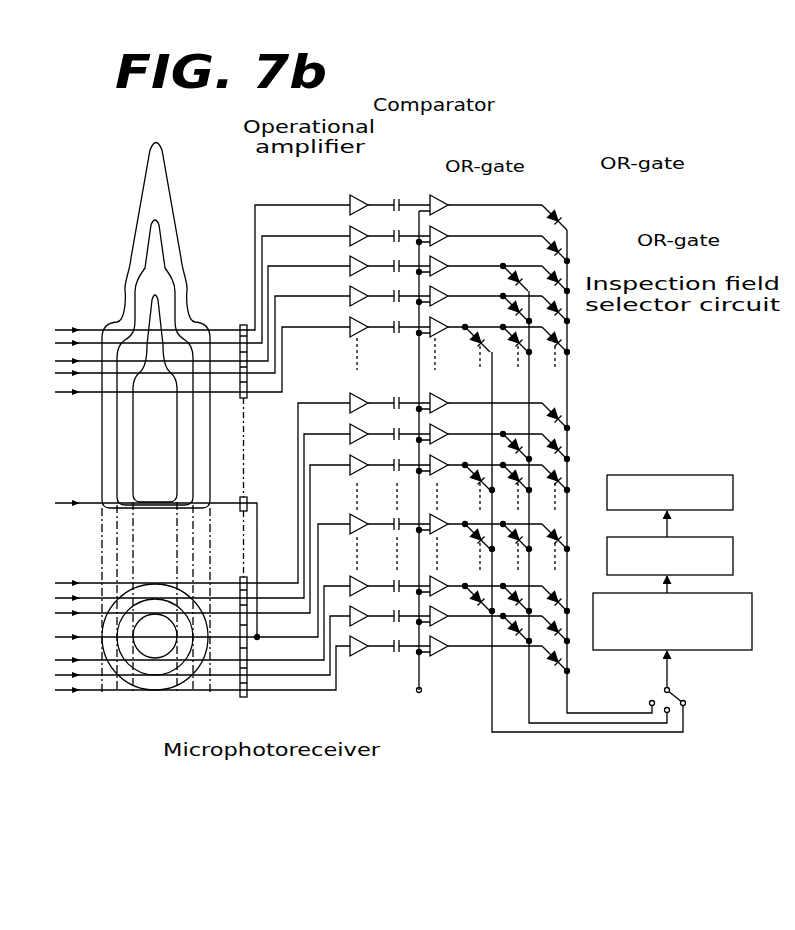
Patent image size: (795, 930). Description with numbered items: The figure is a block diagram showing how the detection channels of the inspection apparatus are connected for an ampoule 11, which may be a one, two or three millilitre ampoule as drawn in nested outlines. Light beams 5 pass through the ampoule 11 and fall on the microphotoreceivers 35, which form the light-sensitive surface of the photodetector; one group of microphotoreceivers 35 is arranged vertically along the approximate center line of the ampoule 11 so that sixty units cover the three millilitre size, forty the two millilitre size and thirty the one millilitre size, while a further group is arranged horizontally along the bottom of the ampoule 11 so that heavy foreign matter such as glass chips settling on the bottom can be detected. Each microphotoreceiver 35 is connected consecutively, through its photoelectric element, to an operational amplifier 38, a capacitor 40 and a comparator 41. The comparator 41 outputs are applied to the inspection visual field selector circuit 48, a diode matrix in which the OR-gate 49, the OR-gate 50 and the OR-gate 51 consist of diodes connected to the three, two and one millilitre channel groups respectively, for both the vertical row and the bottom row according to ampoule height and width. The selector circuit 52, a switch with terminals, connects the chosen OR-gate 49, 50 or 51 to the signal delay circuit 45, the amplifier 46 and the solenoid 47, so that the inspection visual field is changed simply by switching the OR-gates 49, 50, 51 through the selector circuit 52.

The ampoule 11 is at (128, 198).
The light beams 5 is at (121, 506).
The microphotoreceiver 35 is at (246, 697).
The operational amplifier 38 is at (355, 652).
The capacitor 40 is at (397, 660).
The comparator 41 is at (440, 652).
The delay circuit 45 is at (752, 595).
The amplifier 46 is at (733, 540).
The solenoid 47 is at (700, 475).
The inspection visual field selector circuit 48 is at (566, 441).
The OR-gate 49 is at (556, 198).
The OR-gate 50 is at (508, 262).
The OR-gate 51 is at (475, 318).
The selector circuit 52 is at (684, 696).